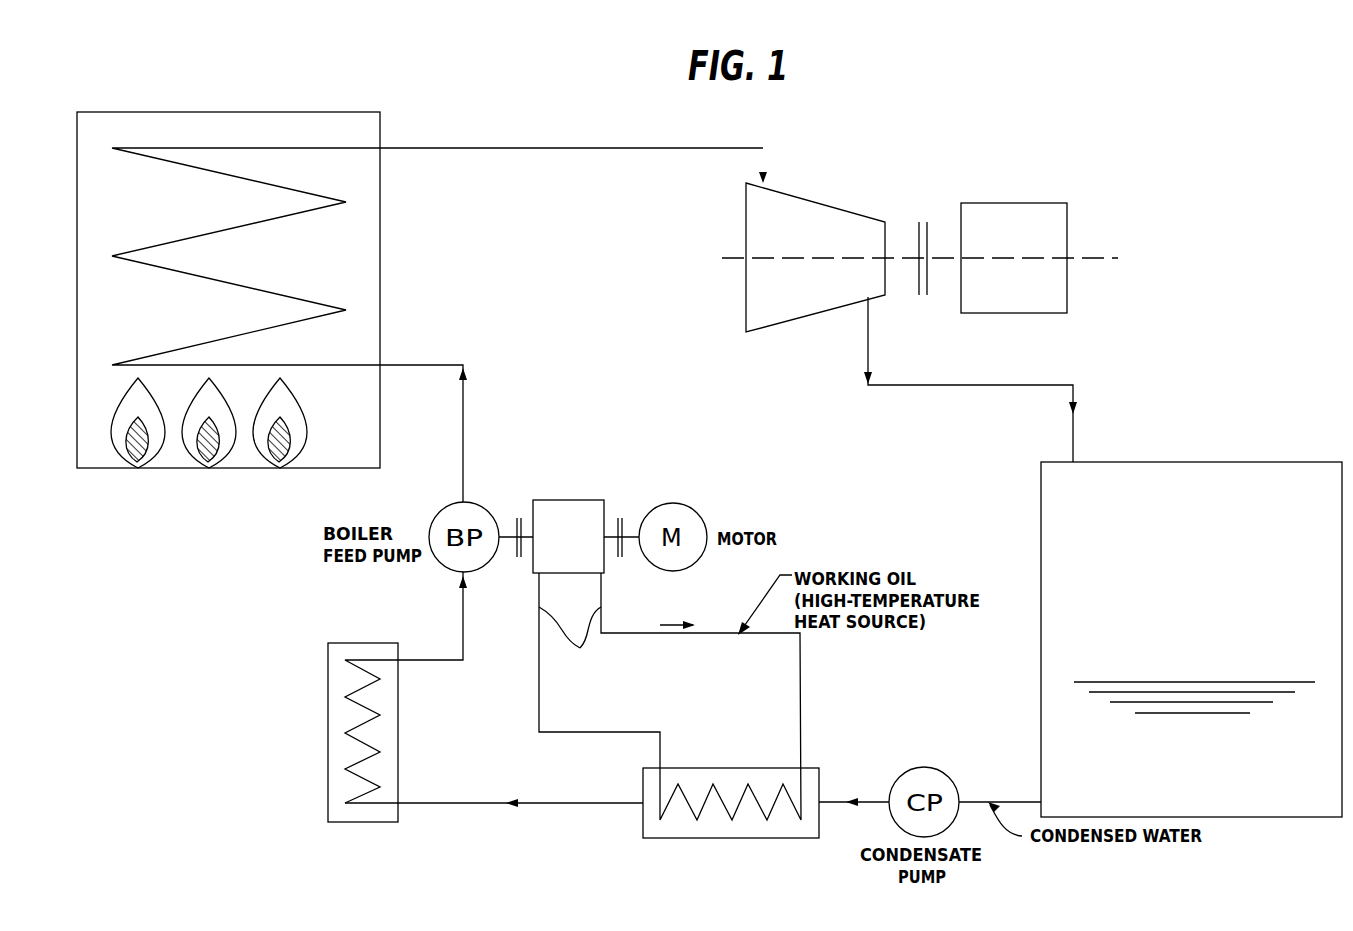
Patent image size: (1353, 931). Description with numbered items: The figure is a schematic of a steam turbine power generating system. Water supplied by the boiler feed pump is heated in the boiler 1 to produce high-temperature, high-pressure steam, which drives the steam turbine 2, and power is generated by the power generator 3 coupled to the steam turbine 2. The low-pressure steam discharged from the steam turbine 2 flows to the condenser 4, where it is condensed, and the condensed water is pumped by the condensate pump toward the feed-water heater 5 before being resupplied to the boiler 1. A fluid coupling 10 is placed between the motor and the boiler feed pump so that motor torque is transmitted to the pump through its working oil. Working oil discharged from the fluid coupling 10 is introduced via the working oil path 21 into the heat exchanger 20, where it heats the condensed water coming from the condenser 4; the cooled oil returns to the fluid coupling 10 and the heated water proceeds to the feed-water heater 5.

The boiler 1 is at (380, 285).
The steam turbine 2 is at (812, 202).
The power generator 3 is at (1023, 203).
The condenser 4 is at (1226, 462).
The feed-water heater 5 is at (328, 705).
The fluid coupling 10 is at (575, 500).
The heat exchanger 20 is at (730, 768).
The working oil path 21 is at (570, 644).